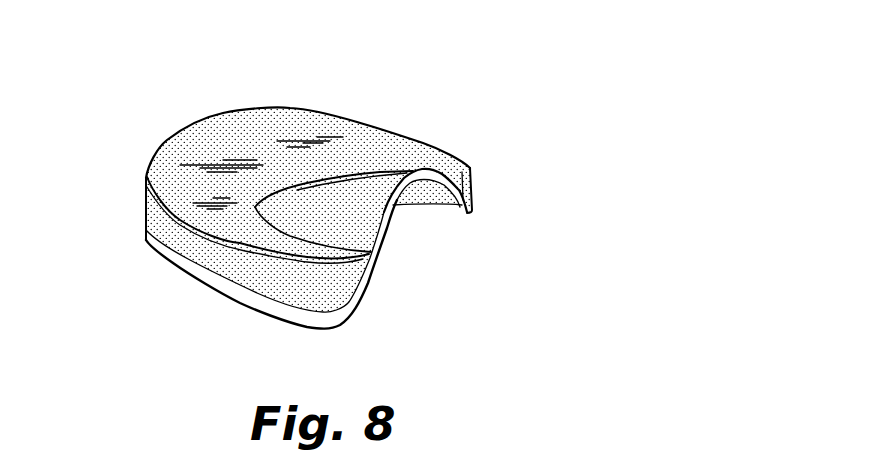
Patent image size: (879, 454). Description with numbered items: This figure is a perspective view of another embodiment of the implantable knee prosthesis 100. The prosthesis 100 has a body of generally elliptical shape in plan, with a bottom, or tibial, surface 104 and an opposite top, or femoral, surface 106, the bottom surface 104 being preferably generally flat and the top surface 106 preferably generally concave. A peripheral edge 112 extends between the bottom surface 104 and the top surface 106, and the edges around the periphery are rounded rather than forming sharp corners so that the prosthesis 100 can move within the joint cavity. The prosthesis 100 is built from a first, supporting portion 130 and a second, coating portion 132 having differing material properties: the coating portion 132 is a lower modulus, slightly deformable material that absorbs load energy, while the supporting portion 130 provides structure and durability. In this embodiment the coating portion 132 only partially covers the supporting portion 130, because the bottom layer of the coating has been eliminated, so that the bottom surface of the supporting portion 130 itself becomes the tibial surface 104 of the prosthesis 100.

The implantable knee prosthesis 100 is at (428, 62).
The bottom surface 104 is at (310, 327).
The top surface 106 is at (203, 142).
The peripheral edge 112 is at (144, 206).
The supporting portion 130 is at (391, 227).
The coating portion 132 is at (389, 147).